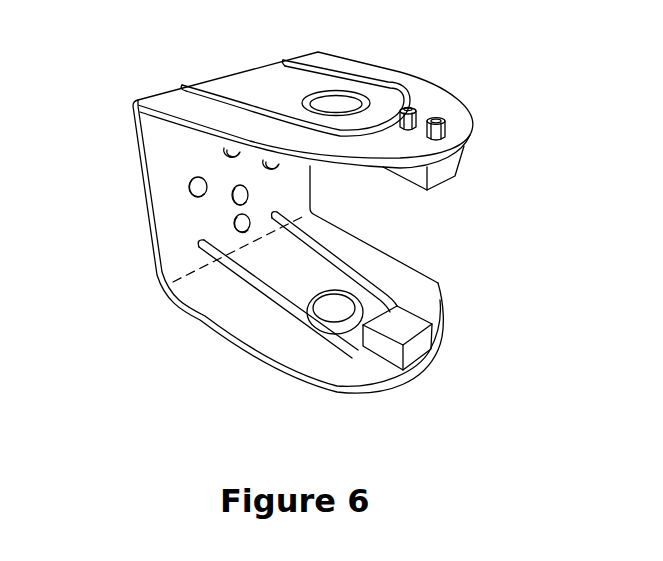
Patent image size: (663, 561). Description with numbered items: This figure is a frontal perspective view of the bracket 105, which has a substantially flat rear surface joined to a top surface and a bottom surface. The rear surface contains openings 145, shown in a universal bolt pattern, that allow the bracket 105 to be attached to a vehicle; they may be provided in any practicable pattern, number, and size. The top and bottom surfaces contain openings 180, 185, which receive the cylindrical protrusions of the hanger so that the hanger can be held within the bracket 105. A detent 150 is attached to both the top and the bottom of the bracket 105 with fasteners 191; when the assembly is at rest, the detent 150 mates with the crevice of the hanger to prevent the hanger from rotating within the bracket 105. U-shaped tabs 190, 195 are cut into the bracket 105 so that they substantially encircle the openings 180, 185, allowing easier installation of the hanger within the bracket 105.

The bracket 105 is at (488, 40).
The openings 145 is at (231, 225).
The detent 150 is at (437, 321).
The opening 180 is at (341, 106).
The opening 185 is at (326, 308).
The U-shaped tab 190 is at (411, 101).
The fasteners 191 is at (423, 112).
The U-shaped tab 195 is at (386, 289).